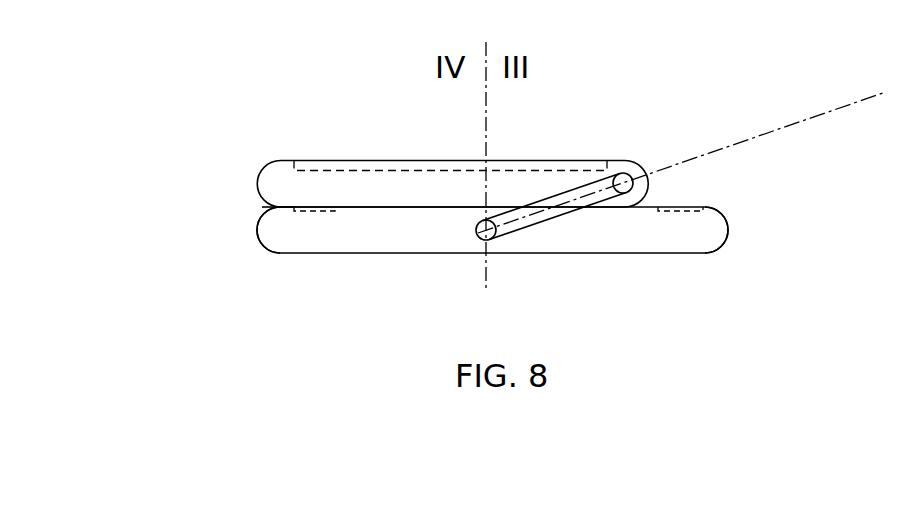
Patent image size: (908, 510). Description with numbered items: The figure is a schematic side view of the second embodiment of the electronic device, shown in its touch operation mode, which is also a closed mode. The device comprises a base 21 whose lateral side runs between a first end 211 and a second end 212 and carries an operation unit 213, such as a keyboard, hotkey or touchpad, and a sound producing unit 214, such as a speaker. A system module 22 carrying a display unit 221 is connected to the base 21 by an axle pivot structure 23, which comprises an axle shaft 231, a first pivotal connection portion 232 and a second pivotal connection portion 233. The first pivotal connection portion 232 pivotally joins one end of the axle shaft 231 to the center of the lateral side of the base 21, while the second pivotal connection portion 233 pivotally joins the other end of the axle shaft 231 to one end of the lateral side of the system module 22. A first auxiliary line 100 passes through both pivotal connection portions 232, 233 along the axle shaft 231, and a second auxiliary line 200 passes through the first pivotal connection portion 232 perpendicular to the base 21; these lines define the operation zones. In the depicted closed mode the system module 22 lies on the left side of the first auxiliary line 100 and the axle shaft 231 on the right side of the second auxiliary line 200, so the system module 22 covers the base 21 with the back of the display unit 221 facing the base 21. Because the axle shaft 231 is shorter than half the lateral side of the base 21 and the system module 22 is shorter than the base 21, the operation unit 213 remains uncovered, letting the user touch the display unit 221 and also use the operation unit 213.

The first auxiliary line 100 is at (707, 157).
The second auxiliary line 200 is at (487, 149).
The base 21 is at (533, 242).
The first end 211 is at (707, 228).
The second end 212 is at (280, 229).
The operation unit 213 is at (707, 203).
The sound producing unit 214 is at (273, 205).
The system module 22 is at (280, 183).
The display unit 221 is at (337, 167).
The axle pivot structure 23 is at (571, 192).
The axle shaft 231 is at (583, 190).
The first pivotal connection portion 232 is at (478, 236).
The second pivotal connection portion 233 is at (627, 186).